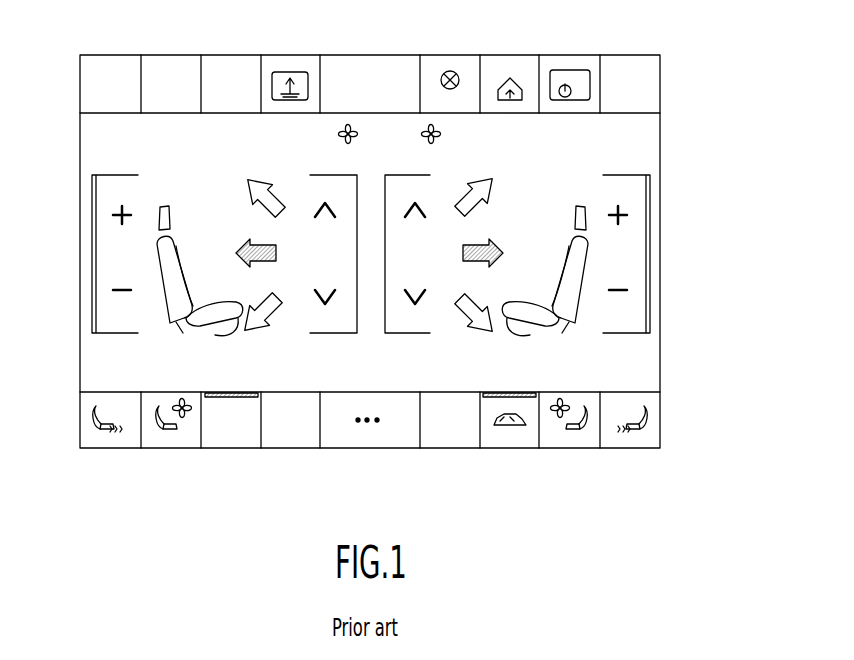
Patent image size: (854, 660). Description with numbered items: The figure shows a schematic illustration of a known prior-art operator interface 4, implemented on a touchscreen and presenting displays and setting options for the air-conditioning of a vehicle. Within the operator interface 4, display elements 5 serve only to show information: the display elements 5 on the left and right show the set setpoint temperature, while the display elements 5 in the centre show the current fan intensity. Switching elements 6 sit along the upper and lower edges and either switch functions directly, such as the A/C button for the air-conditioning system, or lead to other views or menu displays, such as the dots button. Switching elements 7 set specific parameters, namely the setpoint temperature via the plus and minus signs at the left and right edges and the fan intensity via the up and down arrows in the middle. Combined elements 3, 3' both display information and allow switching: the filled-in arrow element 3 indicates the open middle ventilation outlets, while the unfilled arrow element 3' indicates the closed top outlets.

The combined element 3 is at (367, 137).
The combined element 3' is at (370, 174).
The operator interface 4 is at (668, 82).
The display element 5 is at (95, 152).
The switching element 6 is at (276, 72).
The switching element 7 is at (410, 212).